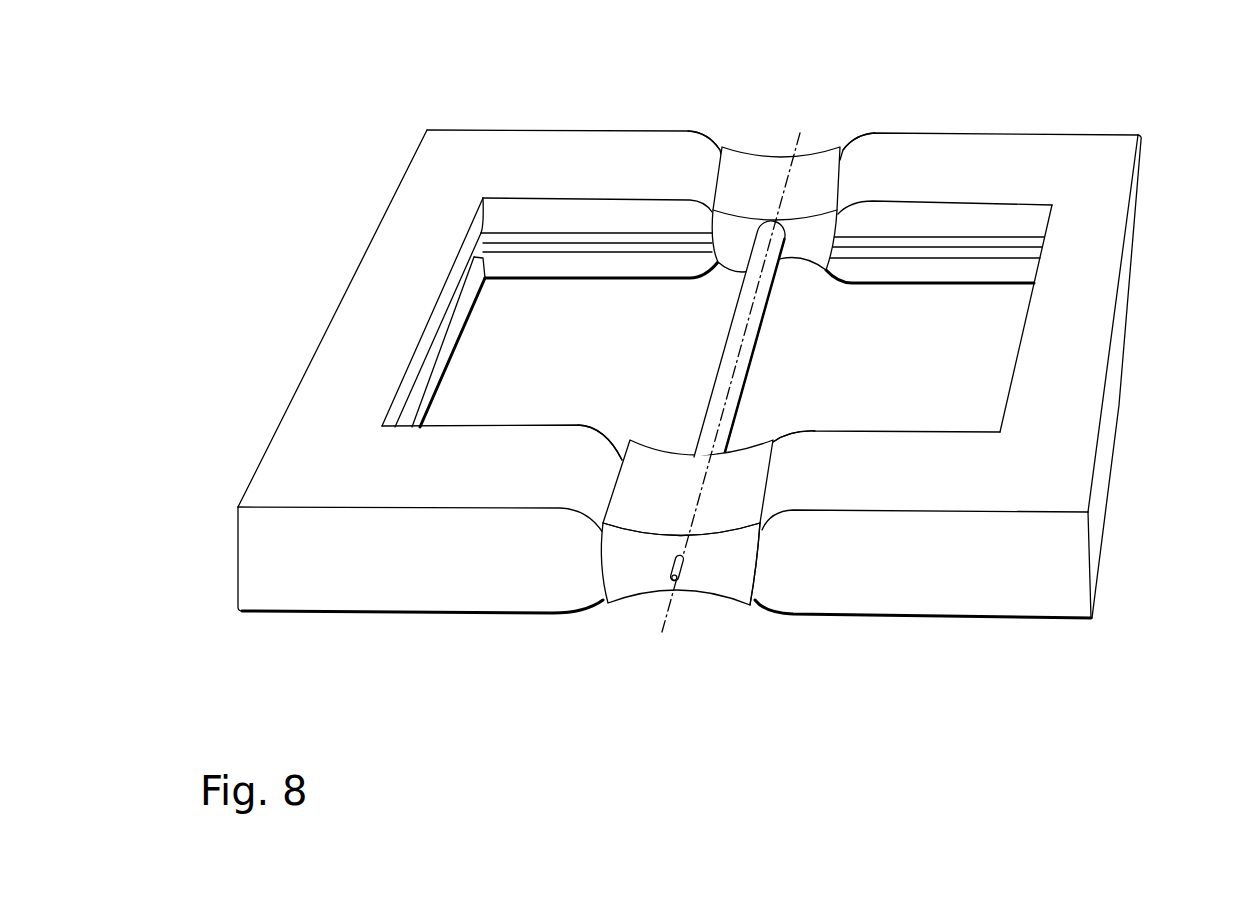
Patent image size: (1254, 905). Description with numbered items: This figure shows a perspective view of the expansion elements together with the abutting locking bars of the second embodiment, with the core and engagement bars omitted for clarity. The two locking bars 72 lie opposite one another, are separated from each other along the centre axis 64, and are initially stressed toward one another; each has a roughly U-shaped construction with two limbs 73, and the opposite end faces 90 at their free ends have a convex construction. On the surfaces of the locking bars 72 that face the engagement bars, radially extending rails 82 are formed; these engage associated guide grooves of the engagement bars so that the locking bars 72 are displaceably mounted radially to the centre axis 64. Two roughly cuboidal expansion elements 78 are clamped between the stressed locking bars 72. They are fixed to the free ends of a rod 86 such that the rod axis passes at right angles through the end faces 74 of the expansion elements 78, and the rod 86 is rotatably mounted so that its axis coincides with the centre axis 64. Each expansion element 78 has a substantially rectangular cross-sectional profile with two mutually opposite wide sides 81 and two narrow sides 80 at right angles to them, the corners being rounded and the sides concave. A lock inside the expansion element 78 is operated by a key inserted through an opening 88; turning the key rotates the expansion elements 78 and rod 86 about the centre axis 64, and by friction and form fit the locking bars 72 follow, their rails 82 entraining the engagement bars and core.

The locking bar 72 is at (397, 350).
The limb 73 is at (298, 578).
The end face 74 is at (810, 257).
The expansion element 78 is at (715, 135).
The narrow side 80 is at (760, 555).
The wide side 81 is at (703, 527).
The rail 82 is at (567, 235).
The rod 86 is at (735, 393).
The opening 88 is at (688, 567).
The centre axis 64 is at (680, 598).
The end face 90 is at (863, 163).